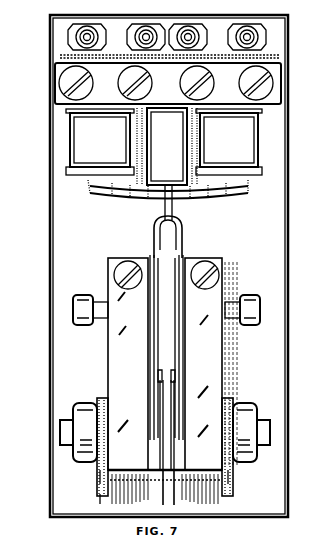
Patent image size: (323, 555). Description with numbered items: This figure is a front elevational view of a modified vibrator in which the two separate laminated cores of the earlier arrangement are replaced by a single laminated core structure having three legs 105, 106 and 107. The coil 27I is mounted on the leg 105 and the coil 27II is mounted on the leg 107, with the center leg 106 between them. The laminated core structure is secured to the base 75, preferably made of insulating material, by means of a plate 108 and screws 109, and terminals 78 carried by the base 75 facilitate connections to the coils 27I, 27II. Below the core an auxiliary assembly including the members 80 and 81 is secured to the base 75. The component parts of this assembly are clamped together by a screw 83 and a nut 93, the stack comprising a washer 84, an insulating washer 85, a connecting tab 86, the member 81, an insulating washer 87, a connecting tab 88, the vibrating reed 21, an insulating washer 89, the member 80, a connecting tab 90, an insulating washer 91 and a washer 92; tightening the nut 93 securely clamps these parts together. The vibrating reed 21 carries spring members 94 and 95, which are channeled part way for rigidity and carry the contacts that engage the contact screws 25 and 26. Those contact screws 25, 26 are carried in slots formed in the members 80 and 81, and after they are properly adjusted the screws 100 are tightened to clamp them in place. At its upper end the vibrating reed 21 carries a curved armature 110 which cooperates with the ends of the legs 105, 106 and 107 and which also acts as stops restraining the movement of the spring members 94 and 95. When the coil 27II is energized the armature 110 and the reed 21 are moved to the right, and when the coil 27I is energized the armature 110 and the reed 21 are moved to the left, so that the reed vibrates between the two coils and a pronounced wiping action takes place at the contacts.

The base 75 is at (52, 238).
The terminals 78 is at (133, 29).
The plate 108 is at (158, 90).
The screws 109 is at (112, 80).
The coil 27I is at (100, 142).
The coil 27II is at (229, 142).
The leg 106 is at (167, 146).
The leg 105 is at (92, 193).
The leg 107 is at (246, 195).
The curved armature 110 is at (164, 212).
The vibrating reed 21 is at (158, 228).
The spring member 94 is at (152, 254).
The spring member 95 is at (182, 254).
The member 80 is at (108, 347).
The member 81 is at (222, 348).
The screws 100 is at (116, 258).
The contact screw 25 is at (88, 295).
The contact screw 26 is at (252, 295).
The nut 93 is at (90, 400).
The washer 92 is at (95, 466).
The insulating washer 91 is at (102, 480).
The connecting tab 90 is at (104, 497).
The screw 83 is at (246, 405).
The washer 84 is at (240, 468).
The insulating washer 85 is at (236, 484).
The connecting tab 86 is at (226, 494).
The connecting tab 88 is at (166, 492).
The insulating washer 89 is at (161, 418).
The insulating washer 87 is at (175, 418).